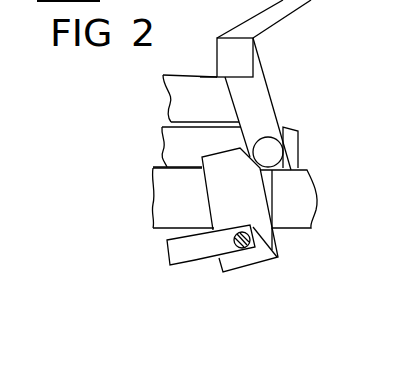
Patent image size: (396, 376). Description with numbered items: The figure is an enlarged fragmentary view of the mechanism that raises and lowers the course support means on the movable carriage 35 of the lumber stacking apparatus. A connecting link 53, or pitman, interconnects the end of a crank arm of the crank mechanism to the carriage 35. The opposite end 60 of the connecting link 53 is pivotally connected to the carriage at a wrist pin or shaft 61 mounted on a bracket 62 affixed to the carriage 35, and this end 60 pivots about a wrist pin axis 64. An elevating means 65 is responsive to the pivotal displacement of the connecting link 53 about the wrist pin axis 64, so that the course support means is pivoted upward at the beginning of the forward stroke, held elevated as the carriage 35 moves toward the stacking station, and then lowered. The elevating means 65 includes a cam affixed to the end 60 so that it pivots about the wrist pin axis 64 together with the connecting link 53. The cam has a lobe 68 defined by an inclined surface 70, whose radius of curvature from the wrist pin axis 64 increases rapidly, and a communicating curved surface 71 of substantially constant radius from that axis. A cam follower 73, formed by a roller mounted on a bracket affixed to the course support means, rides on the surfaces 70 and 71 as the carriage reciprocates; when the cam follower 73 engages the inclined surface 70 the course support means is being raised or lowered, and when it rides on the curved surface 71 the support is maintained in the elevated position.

The carriage 35 is at (160, 152).
The connecting link 53 is at (212, 262).
The opposite end of connecting link 60 is at (273, 231).
The bolt 61 is at (240, 250).
The bracket 62 is at (267, 197).
The wrist pin axis 64 is at (274, 253).
The elevating means 65 is at (206, 212).
The lobe 68 is at (240, 210).
The inclined surface 70 is at (248, 140).
The curved surface 71 is at (219, 149).
The cam follower 73 is at (275, 155).